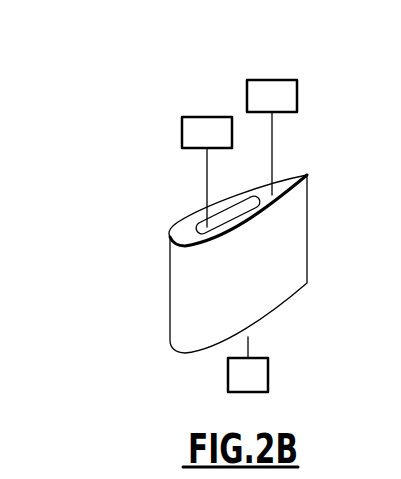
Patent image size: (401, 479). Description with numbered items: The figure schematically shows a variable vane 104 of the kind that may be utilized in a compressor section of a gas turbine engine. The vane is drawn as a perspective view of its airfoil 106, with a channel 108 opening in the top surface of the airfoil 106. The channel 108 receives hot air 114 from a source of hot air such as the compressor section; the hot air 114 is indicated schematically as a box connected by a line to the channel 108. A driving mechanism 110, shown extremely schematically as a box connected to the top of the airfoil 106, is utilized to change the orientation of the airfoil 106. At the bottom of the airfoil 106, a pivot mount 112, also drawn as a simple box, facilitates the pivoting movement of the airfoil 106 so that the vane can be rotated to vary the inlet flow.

The variable vane 104 is at (203, 265).
The airfoil 106 is at (293, 250).
The channel 108 is at (200, 225).
The driving mechanism 110 is at (267, 93).
The pivot mount 112 is at (255, 375).
The hot air 114 is at (212, 128).